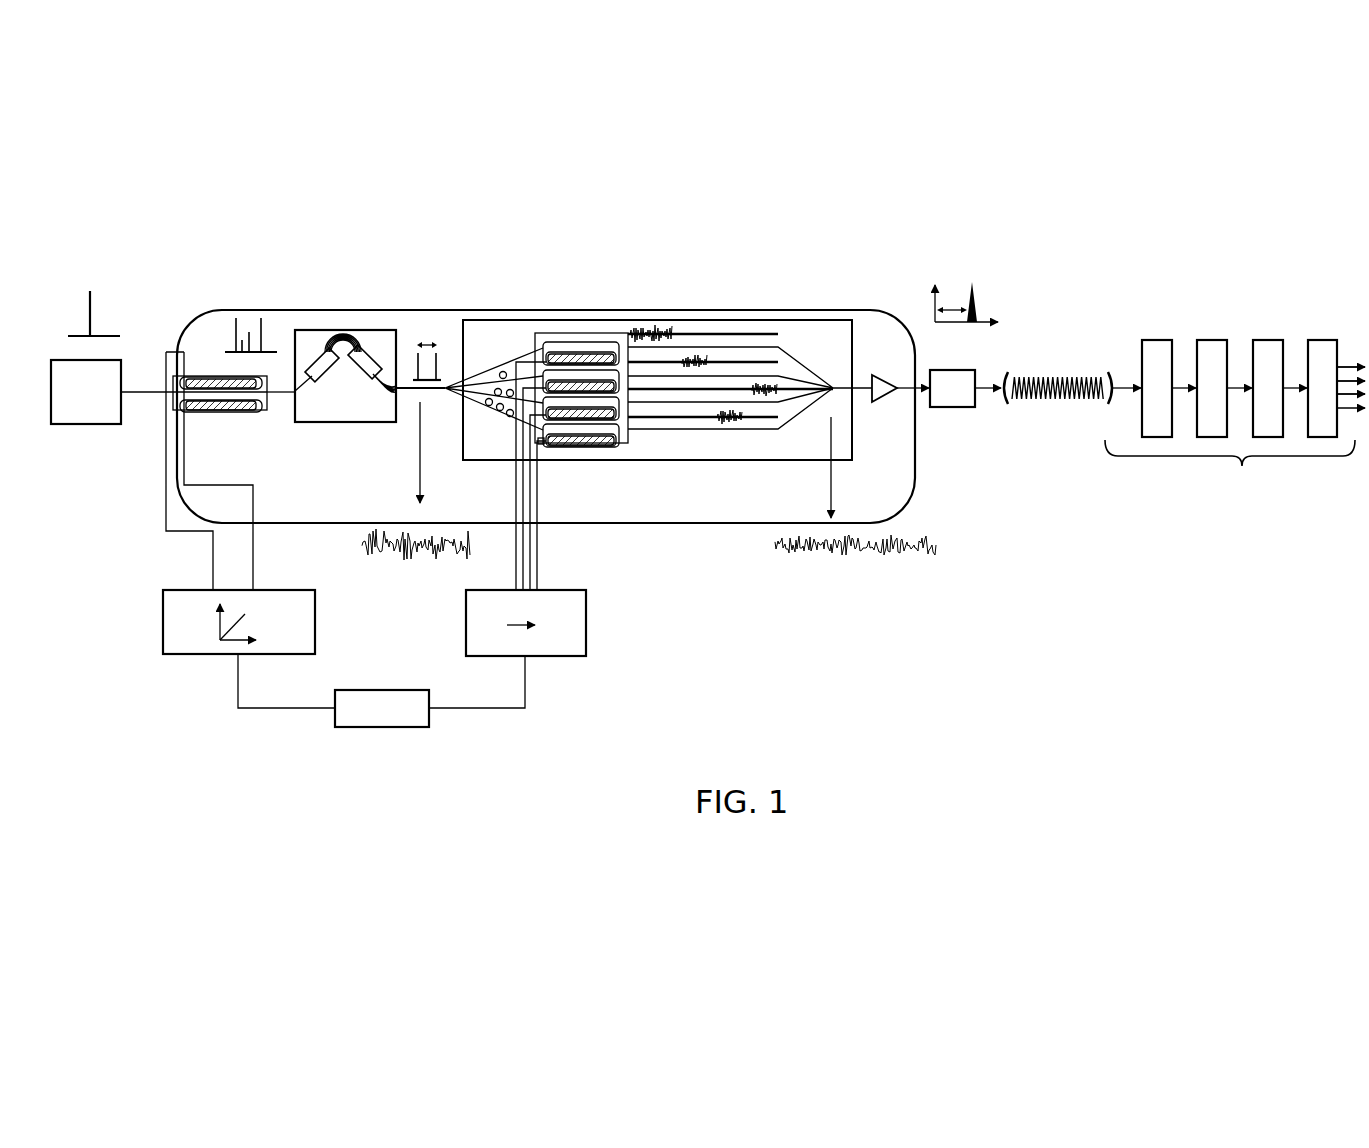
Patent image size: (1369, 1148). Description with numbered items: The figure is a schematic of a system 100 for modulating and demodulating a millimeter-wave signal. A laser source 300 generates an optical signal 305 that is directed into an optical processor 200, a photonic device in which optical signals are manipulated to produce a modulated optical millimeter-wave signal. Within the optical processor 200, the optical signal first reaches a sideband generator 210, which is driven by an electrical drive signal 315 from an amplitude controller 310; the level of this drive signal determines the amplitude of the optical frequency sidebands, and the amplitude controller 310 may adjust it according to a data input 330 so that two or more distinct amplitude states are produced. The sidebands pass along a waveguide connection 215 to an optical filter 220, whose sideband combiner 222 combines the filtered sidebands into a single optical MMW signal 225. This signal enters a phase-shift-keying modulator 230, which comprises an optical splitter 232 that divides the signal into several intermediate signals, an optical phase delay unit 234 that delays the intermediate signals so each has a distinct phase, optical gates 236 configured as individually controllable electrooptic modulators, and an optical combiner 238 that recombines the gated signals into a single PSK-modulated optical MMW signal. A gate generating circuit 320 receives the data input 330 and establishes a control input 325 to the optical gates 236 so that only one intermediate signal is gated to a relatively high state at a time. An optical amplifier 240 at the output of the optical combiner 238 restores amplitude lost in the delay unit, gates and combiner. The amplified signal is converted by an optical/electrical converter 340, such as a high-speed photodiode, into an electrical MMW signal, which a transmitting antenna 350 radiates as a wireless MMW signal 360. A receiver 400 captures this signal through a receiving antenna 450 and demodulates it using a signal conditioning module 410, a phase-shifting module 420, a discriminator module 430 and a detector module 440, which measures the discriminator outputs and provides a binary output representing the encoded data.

The system 100 is at (1047, 262).
The optical processor 200 is at (295, 310).
The sideband generator 210 is at (215, 376).
The optical waveguide 215 is at (280, 393).
The optical filter 220 is at (333, 424).
The sideband combiner 222 is at (406, 368).
The optical MMW signal 225 is at (416, 396).
The phase-shift-keying (PSK) modulator 230 is at (620, 320).
The optical splitter 232 is at (447, 402).
The optical phase delay unit 234 is at (498, 427).
The optical gates 236 is at (630, 442).
The optical combiner 238 is at (830, 394).
The optical amplifier 240 is at (884, 402).
The laser source 300 is at (86, 424).
The optical signal 305 is at (147, 392).
The amplitude controller 310 is at (163, 622).
The electrical drive signal 315 is at (213, 555).
The gate generating circuit 320 is at (466, 620).
The control input 325 is at (553, 549).
The data input 330 is at (383, 727).
The optical/electrical (O/E) converter 340 is at (955, 408).
The transmitting antenna 350 is at (1003, 370).
The wireless MMW signal 360 is at (1062, 412).
The receiver 400 is at (1230, 470).
The signal conditioning module 410 is at (1157, 340).
The phase-shifting module 420 is at (1211, 340).
The discriminator module 430 is at (1266, 340).
The detector module 440 is at (1321, 340).
The receiving antenna 450 is at (1116, 368).